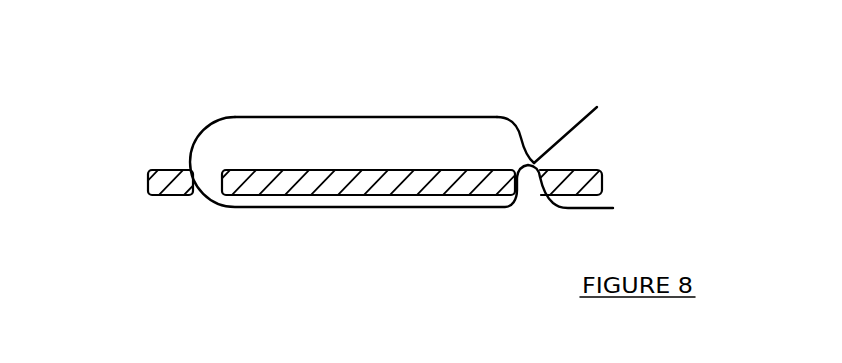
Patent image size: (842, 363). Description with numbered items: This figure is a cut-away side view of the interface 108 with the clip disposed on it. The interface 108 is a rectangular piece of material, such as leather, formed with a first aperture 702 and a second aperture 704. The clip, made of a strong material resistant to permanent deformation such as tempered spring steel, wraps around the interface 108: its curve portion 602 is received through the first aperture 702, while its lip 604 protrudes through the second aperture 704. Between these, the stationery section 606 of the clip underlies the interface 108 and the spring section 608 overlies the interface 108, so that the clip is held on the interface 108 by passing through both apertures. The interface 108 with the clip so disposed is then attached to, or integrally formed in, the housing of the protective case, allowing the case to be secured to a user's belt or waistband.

The interface 108 is at (152, 195).
The curve portion 602 is at (193, 138).
The lip 604 is at (555, 162).
The stationery section 606 is at (349, 207).
The spring section 608 is at (368, 112).
The first aperture 702 is at (202, 220).
The second aperture 704 is at (521, 210).